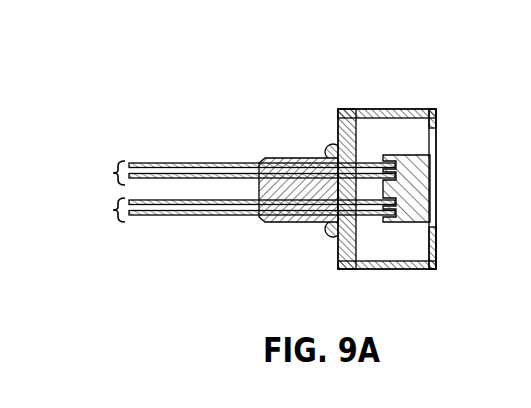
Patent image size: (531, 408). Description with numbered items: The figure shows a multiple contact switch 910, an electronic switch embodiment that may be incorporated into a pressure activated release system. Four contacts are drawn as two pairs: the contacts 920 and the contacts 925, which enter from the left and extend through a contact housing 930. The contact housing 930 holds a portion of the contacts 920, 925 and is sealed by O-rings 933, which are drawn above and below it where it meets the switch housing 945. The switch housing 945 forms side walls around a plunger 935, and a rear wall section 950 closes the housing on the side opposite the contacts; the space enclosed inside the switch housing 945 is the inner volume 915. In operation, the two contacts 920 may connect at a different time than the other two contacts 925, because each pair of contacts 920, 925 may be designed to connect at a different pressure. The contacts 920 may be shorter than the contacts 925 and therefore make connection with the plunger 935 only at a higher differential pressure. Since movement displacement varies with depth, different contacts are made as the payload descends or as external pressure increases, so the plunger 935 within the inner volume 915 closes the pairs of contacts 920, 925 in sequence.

The multiple contact switch 910 is at (242, 98).
The inner volume 915 is at (388, 243).
The contacts 920 is at (231, 174).
The contacts 925 is at (231, 211).
The contact housing 930 is at (308, 153).
The O-rings 933 is at (328, 238).
The plunger 935 is at (427, 200).
The switch housing 945 is at (382, 108).
The rear wall section 950 is at (437, 133).